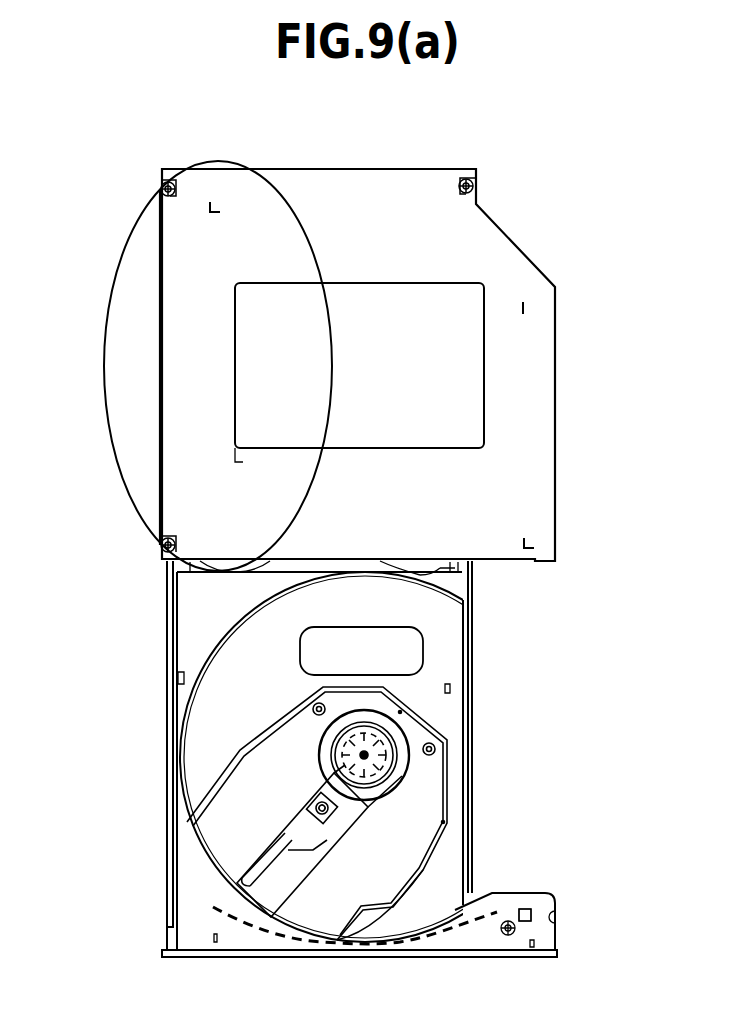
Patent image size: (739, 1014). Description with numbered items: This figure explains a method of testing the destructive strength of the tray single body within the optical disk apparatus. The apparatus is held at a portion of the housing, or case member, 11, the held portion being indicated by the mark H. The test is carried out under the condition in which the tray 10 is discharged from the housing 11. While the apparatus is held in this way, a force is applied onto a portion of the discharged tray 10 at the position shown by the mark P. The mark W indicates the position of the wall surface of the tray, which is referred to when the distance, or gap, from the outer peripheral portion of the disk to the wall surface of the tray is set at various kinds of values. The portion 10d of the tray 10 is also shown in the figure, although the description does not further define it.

The housing 11 is at (555, 395).
The tray 10 is at (470, 705).
The tray bottom portion 10d is at (427, 888).
The holding portion mark H is at (107, 436).
The wall surface position mark W is at (212, 907).
The force application position mark P is at (519, 916).